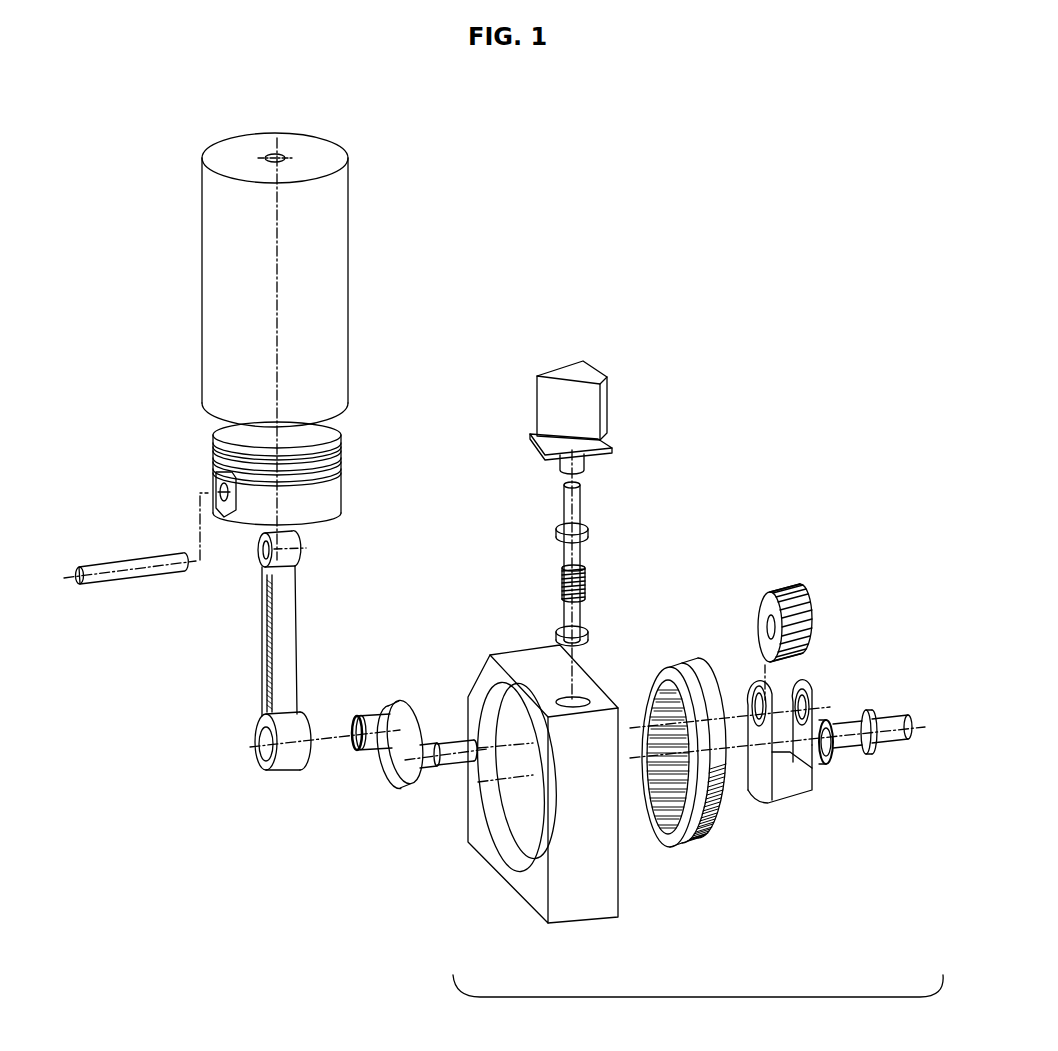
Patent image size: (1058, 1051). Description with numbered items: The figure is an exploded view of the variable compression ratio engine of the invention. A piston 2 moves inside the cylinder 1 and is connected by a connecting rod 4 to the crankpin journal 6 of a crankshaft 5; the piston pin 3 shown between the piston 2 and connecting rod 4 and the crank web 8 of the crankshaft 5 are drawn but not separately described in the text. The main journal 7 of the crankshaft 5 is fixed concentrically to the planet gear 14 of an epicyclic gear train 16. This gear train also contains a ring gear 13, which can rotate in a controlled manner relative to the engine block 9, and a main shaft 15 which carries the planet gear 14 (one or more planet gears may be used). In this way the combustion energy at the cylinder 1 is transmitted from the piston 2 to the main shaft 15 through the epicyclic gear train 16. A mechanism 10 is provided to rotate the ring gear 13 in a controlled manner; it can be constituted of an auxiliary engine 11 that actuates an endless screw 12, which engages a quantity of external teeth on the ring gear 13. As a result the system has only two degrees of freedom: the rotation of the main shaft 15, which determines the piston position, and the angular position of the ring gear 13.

The cylinder 1 is at (344, 219).
The piston 2 is at (322, 495).
The piston pin 3 is at (106, 552).
The connecting rod 4 is at (250, 680).
The crankshaft 5 is at (365, 753).
The crankpin journal 6 is at (380, 730).
The main journal 7 is at (448, 748).
The crank web 8 is at (402, 737).
The engine block 9 is at (580, 895).
The mechanism 10 is at (547, 560).
The auxiliary engine 11 is at (577, 411).
The endless screw 12 is at (602, 574).
The ring gear 13 is at (726, 855).
The planet gear 14 is at (812, 592).
The main shaft 15 is at (890, 743).
The epicyclic gear train 16 is at (698, 1012).